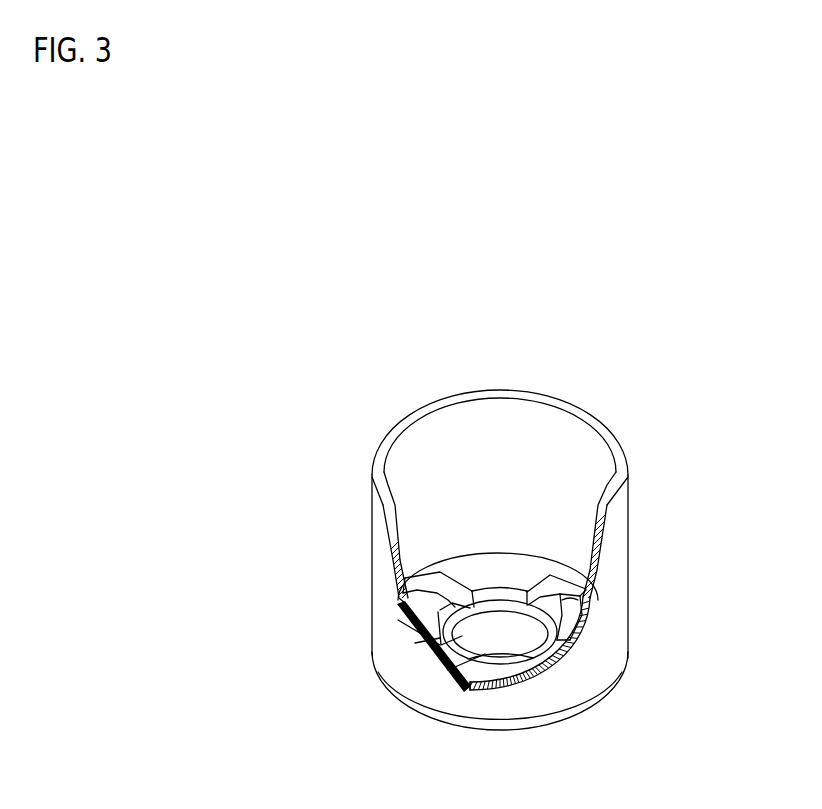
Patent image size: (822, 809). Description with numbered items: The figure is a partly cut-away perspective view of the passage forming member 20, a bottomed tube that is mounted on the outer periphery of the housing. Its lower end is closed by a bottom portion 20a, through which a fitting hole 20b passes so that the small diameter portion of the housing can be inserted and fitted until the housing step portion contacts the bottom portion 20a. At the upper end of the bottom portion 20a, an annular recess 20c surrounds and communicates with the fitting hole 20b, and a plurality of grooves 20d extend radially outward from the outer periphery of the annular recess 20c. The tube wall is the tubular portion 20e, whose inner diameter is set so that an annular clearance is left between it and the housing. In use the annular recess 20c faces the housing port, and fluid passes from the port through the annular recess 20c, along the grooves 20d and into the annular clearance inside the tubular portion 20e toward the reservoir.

The passage forming member 20 is at (385, 431).
The bottom portion 20a is at (479, 673).
The fitting hole 20b is at (502, 733).
The annular recess 20c is at (512, 603).
The grooves 20d is at (398, 590).
The tubular portion 20e is at (372, 523).